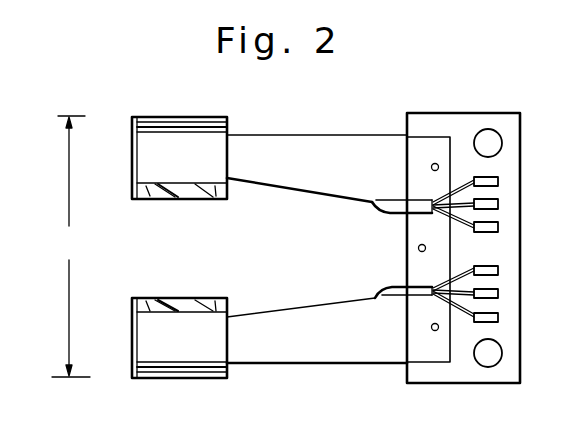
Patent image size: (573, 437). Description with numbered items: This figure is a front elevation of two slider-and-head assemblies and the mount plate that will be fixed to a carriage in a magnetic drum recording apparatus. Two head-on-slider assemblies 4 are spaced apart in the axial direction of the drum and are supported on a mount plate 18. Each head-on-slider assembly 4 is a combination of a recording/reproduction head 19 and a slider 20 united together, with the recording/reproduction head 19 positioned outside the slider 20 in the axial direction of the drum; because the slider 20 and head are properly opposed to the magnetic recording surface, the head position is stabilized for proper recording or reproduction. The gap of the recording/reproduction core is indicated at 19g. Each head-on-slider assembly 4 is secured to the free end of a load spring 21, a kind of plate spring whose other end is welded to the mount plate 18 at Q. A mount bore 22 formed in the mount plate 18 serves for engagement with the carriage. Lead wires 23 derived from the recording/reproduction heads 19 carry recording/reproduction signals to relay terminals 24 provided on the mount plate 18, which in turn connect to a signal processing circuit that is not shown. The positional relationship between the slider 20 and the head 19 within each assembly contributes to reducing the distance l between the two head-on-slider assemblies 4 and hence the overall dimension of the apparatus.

The head-on-slider assembly 4 is at (132, 116).
The mount plate 18 is at (520, 138).
The recording/reproduction head 19 is at (229, 122).
The gap of a recording/reproduction core 19g is at (182, 118).
The slider 20 is at (155, 151).
The load spring 21 is at (338, 148).
The mount bore 22 is at (490, 131).
The lead wire 23 is at (378, 211).
The relay terminal 24 is at (498, 227).
The welding point Q is at (435, 163).
The distance between the two head-on-slider assemblies l is at (71, 246).